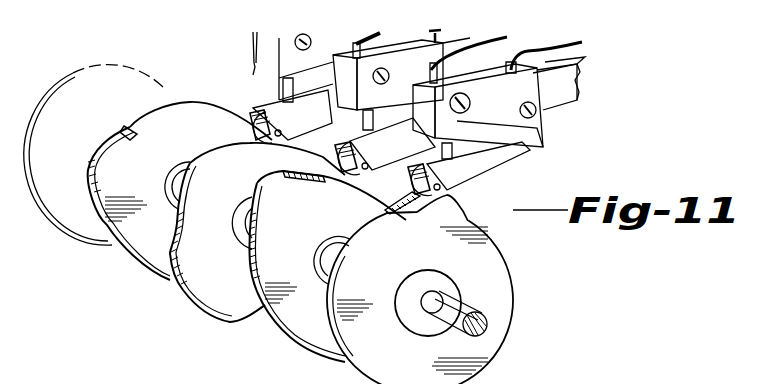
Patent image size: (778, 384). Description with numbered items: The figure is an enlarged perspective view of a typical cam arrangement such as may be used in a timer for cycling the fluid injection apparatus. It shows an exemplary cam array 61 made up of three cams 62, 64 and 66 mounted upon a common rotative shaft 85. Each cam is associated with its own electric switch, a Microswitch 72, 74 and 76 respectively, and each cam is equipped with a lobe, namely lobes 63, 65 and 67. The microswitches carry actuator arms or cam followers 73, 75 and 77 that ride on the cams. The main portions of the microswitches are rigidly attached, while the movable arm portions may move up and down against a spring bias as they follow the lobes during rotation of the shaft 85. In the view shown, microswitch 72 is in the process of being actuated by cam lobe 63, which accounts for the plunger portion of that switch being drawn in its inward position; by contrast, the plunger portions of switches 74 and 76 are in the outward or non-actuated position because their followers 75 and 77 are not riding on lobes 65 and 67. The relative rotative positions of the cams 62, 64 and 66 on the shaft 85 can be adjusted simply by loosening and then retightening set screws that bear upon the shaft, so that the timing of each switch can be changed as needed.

The cam array 61 is at (139, 289).
The cam 62 is at (377, 345).
The cam lobe 63 is at (440, 216).
The cam 64 is at (320, 330).
The cam lobe 65 is at (278, 197).
The cam 66 is at (250, 303).
The cam lobe 67 is at (197, 285).
The microswitch 72 is at (468, 83).
The actuator arm 73 is at (505, 155).
The microswitch 74 is at (383, 57).
The actuator arm 75 is at (388, 140).
The microswitch 76 is at (253, 72).
The actuator arm 77 is at (307, 117).
The rotative shaft 85 is at (487, 323).